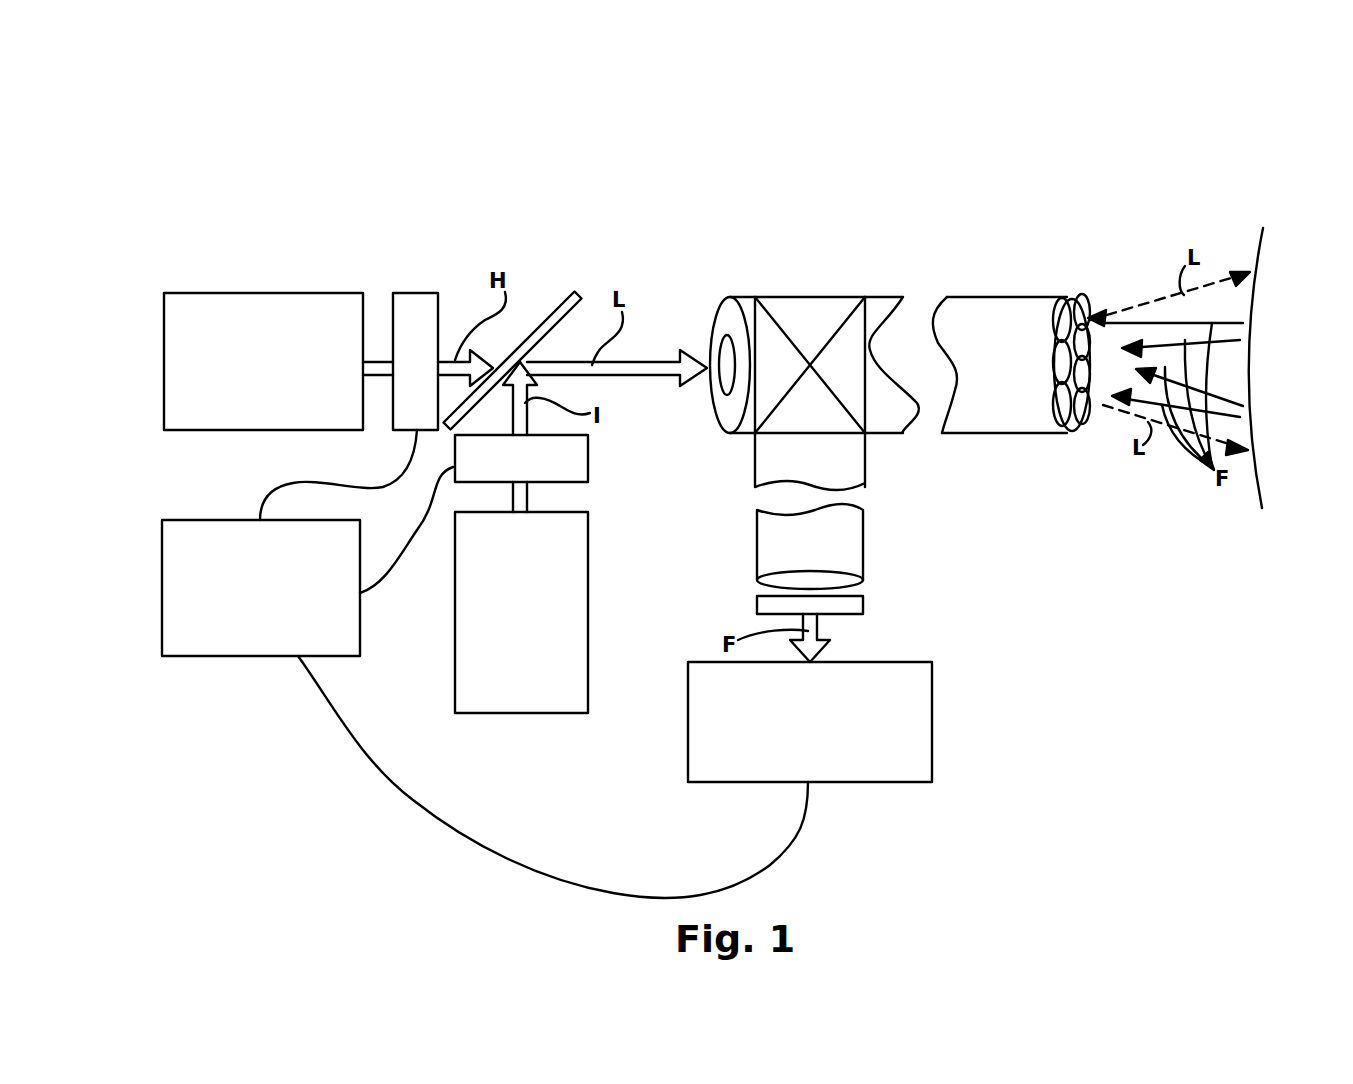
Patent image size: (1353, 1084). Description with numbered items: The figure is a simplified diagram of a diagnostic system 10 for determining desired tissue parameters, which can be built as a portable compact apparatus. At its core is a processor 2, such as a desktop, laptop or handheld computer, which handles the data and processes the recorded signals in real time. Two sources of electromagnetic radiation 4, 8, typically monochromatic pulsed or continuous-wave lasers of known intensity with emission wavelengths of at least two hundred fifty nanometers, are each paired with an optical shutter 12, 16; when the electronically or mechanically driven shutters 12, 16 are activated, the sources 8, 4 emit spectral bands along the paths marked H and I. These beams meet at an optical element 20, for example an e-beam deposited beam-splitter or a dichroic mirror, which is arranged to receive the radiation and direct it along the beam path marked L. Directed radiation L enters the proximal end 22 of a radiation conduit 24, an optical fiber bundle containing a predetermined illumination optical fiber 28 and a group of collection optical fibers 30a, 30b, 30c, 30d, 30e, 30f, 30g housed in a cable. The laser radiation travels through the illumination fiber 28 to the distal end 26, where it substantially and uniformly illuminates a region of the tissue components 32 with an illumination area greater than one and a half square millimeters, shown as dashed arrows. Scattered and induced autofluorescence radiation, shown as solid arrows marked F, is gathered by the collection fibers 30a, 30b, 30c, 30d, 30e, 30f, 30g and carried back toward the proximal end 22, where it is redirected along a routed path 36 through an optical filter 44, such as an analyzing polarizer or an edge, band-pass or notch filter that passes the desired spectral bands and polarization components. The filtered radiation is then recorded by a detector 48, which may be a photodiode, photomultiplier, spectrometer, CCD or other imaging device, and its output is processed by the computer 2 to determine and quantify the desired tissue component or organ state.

The processor 2 is at (270, 656).
The source of electromagnetic radiation 4 is at (523, 713).
The source of electromagnetic radiation 8 is at (248, 293).
The system 10 is at (352, 128).
The optical shutter 12 is at (413, 293).
The optical shutter 16 is at (588, 455).
The optical element 20 is at (557, 307).
The proximal end 22 is at (728, 297).
The radiation conduit 24 is at (1002, 297).
The distal end 26 is at (1071, 300).
The illumination optical fiber 28 is at (724, 368).
The collection optical fiber 30a is at (1077, 300).
The collection optical fiber 30b is at (1062, 298).
The collection optical fiber 30c is at (1053, 345).
The collection optical fiber 30d is at (1056, 408).
The collection optical fiber 30e is at (1068, 412).
The collection optical fiber 30f is at (1085, 420).
The collection optical fiber 30g is at (1088, 333).
The tissue components 32 is at (1247, 260).
The routed path 36 is at (800, 413).
The optical filter 44 is at (863, 603).
The detector 48 is at (932, 713).